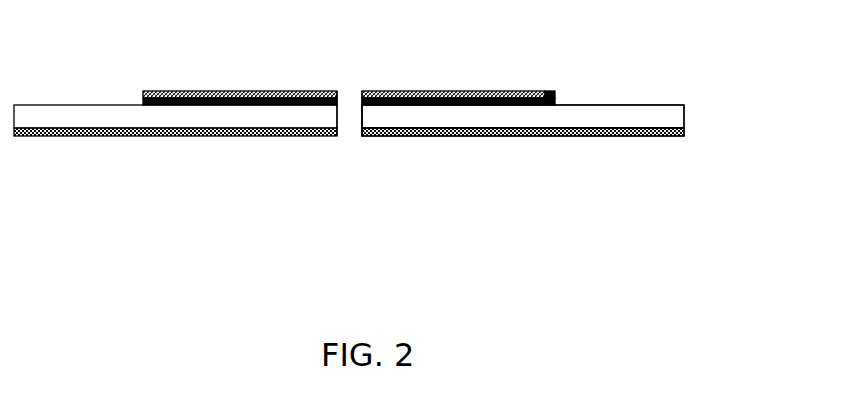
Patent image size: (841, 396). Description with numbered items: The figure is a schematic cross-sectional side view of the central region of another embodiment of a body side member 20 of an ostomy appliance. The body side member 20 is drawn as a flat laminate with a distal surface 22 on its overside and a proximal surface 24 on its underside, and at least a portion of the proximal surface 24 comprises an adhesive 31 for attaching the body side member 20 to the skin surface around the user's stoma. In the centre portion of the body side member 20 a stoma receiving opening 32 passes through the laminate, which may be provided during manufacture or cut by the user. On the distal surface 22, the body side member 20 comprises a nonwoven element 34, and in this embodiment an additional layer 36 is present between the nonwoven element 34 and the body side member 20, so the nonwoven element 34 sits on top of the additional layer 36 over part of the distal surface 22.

The body side member 20 is at (676, 118).
The distal surface 22 is at (624, 104).
The proximal surface 24 is at (651, 130).
The adhesive 31 is at (522, 137).
The stoma receiving opening 32 is at (351, 138).
The nonwoven element 34 is at (487, 92).
The additional layer 36 is at (547, 93).